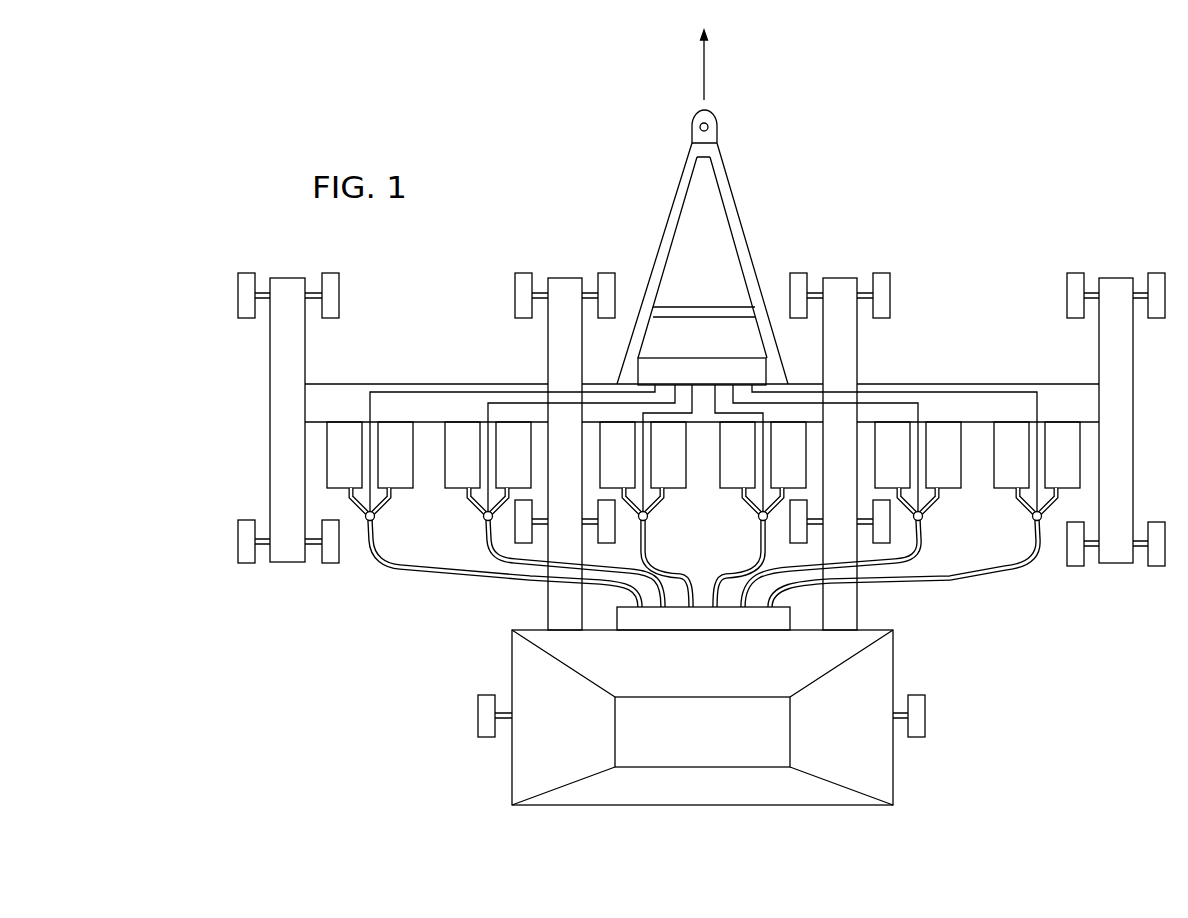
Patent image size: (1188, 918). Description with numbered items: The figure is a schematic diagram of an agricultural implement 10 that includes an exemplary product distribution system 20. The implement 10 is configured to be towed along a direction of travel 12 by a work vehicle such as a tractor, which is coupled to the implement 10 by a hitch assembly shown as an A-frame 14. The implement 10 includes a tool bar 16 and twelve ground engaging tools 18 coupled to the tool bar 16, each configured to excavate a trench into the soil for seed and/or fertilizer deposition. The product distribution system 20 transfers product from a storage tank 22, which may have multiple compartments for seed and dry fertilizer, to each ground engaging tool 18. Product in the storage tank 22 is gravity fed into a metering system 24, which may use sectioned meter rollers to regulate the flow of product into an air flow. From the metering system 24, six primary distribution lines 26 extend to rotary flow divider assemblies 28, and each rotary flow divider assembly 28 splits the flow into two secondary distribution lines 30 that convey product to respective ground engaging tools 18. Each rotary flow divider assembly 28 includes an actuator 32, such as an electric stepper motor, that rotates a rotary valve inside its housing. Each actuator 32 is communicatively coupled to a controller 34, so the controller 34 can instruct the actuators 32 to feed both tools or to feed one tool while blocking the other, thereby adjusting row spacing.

The agricultural implement 10 is at (972, 168).
The direction of travel 12 is at (705, 76).
The A-frame 14 is at (732, 212).
The tool bar 16 is at (1063, 397).
The ground engaging tools 18 is at (444, 512).
The product distribution system 20 is at (446, 688).
The storage tank 22 is at (512, 778).
The metering system 24 is at (615, 612).
The primary distribution lines 26 is at (403, 570).
The rotary flow divider assemblies 28 is at (365, 530).
The secondary distribution lines 30 is at (350, 507).
The actuator 32 is at (376, 517).
The controller 34 is at (660, 358).